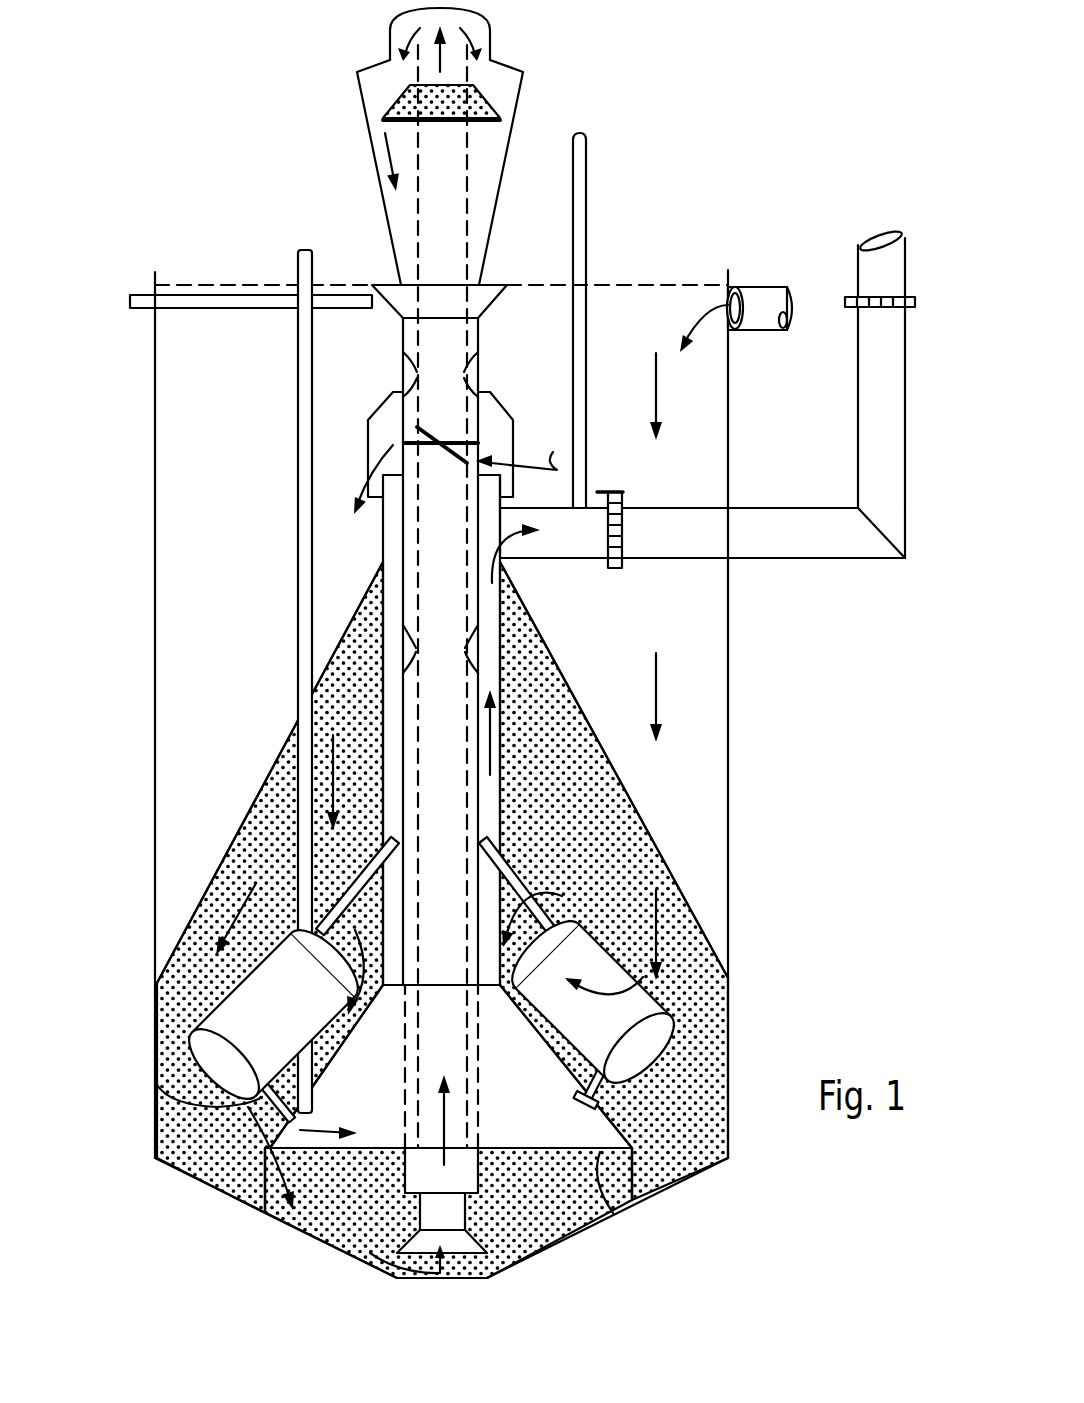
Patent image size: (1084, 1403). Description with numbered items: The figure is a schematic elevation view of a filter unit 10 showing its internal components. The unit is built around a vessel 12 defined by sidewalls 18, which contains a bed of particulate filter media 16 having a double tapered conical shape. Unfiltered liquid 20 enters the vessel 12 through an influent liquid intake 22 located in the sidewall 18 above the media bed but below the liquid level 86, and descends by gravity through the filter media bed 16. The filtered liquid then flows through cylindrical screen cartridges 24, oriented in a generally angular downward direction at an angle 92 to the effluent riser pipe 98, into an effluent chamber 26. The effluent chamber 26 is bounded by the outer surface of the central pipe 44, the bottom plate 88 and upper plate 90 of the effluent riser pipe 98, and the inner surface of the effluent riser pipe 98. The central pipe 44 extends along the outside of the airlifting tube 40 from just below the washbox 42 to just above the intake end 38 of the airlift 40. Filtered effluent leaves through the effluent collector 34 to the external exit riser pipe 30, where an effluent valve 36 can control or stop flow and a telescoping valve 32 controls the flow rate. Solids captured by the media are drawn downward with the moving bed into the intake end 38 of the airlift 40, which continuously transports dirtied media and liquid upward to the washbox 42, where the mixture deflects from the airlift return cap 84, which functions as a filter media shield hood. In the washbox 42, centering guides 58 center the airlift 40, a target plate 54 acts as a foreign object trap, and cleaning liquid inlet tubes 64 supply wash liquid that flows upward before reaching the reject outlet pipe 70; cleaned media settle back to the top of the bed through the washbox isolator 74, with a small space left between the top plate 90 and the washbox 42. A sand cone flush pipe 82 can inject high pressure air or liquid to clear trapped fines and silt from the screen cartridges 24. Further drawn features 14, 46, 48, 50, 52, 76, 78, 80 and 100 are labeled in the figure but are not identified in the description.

The filter unit 10 is at (208, 203).
The vessel 12 is at (728, 760).
The bottom of housing 14 is at (660, 1195).
The filter media bed 16 is at (485, 95).
The sidewalls 18 is at (155, 796).
The unfiltered liquid 20 is at (702, 304).
The influent liquid intake 22 is at (756, 287).
The screen cartridge 24 is at (292, 1020).
The effluent chamber 26 is at (383, 593).
The exit riser pipe 30 is at (858, 428).
The telescoping valve 32 is at (858, 282).
The effluent collector 34 is at (840, 558).
The effluent valve 36 is at (622, 505).
The intake end 38 is at (487, 1258).
The airlift 40 is at (418, 1213).
The washbox 42 is at (360, 105).
The central pipe 44 is at (487, 1162).
The material bed surface 46 is at (612, 1220).
The lower chute wall 48 is at (595, 1132).
The material heap boundary 50 is at (200, 1105).
The vertical gas pipe 52 is at (587, 225).
The target plate 54 is at (468, 120).
The centering guides 58 is at (476, 375).
The inlet tubes 64 is at (447, 442).
The reject outlet pipe 70 is at (236, 296).
The washbox isolator 74 is at (367, 440).
The valve housing right portion 76 is at (372, 415).
The right deflector 78 is at (478, 650).
The left drum support rod 80 is at (372, 1147).
The sand cone flush pipe 82 is at (296, 250).
The airlift return cap 84 is at (478, 14).
The liquid level 86 is at (678, 285).
The bottom plate 88 is at (496, 990).
The upper plate 90 is at (398, 535).
The angle 92 is at (551, 904).
The effluent riser pipe 98 is at (403, 662).
The right drum support rod 100 is at (513, 868).